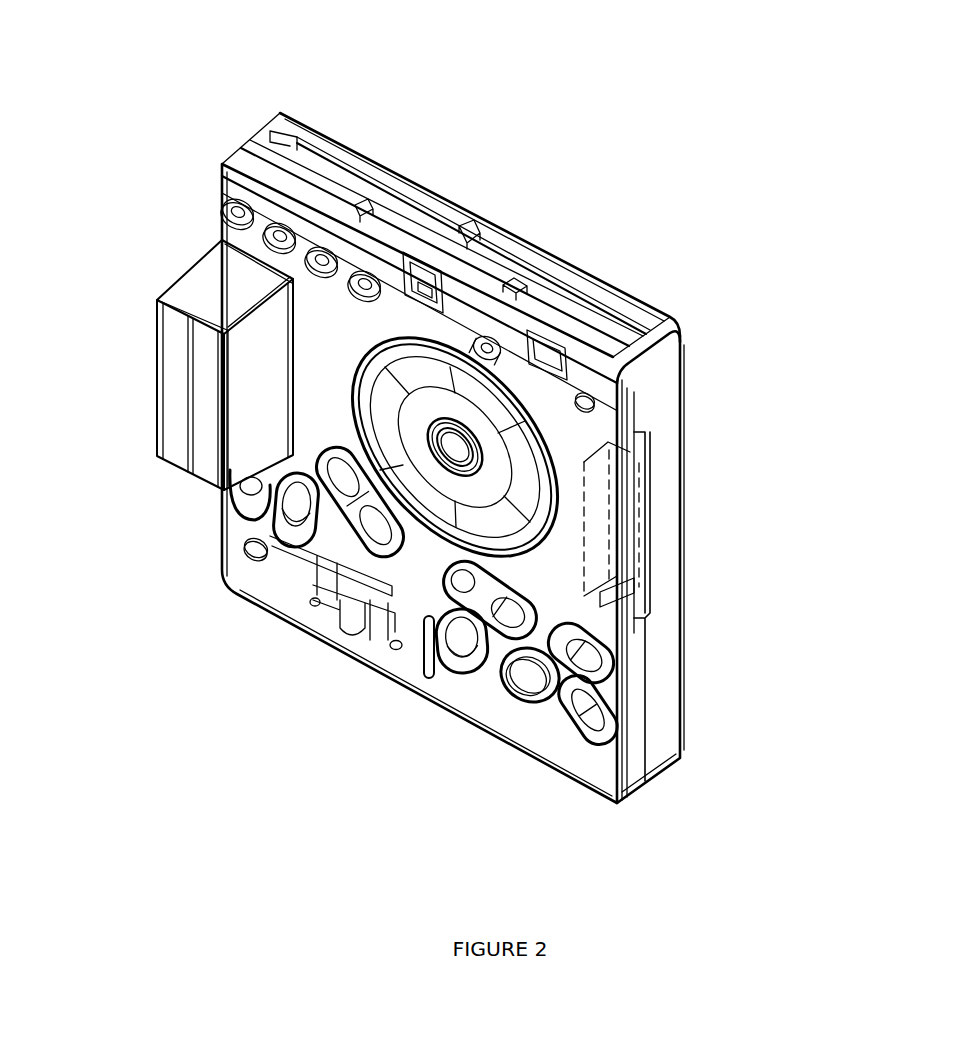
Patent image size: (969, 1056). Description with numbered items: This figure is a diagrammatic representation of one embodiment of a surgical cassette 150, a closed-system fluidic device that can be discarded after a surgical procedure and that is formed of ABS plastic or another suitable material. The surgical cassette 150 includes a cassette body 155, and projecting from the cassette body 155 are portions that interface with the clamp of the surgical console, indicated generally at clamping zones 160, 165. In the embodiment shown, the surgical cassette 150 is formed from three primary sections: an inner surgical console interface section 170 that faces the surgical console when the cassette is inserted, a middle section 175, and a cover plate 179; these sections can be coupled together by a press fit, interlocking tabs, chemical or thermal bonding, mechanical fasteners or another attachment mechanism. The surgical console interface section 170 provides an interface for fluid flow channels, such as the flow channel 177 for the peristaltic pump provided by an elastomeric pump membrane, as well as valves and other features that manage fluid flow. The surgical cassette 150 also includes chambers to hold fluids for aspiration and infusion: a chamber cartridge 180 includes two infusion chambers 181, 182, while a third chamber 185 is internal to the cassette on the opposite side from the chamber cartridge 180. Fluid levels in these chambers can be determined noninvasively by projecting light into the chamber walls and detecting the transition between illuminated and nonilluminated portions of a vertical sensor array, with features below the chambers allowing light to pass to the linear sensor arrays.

The surgical cassette 150 is at (703, 137).
The cassette body 155 is at (207, 527).
The clamping zone 160 is at (337, 152).
The clamping zone 165 is at (525, 268).
The surgical console interface section 170 is at (628, 772).
The middle section 175 is at (653, 722).
The flow channel 177 is at (527, 471).
The cover plate 179 is at (685, 316).
The chamber cartridge 180 is at (205, 287).
The infusion chamber 181 is at (175, 348).
The infusion chamber 182 is at (205, 428).
The third chamber 185 is at (633, 526).